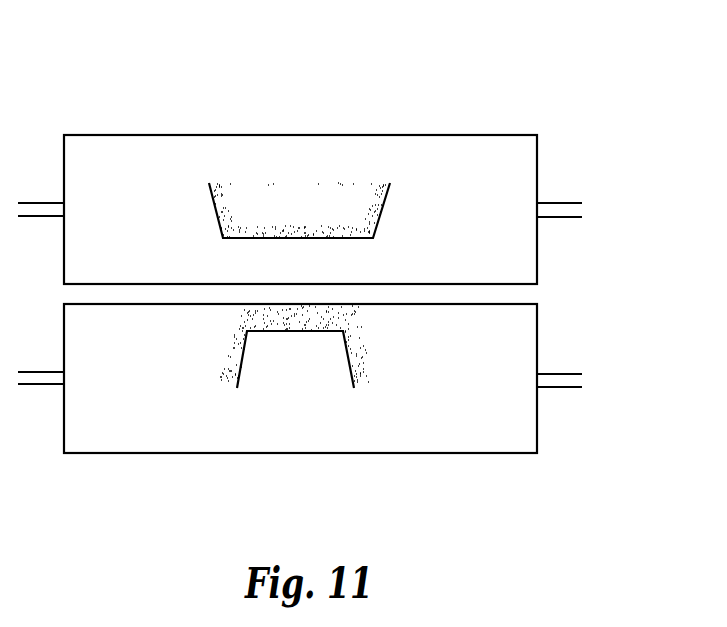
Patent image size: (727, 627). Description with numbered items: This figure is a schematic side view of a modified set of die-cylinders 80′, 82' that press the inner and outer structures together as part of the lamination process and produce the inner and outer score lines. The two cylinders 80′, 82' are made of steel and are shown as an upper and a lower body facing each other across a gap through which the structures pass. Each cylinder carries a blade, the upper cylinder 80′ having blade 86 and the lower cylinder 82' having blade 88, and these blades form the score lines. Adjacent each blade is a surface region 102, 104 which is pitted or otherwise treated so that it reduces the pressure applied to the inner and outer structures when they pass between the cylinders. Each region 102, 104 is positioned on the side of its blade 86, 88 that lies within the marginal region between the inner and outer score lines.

The die-cylinder 80′ is at (475, 178).
The die-cylinder 82' is at (311, 406).
The blade 86 is at (212, 205).
The blade 88 is at (251, 375).
The surface region 102 is at (232, 203).
The surface region 104 is at (358, 332).